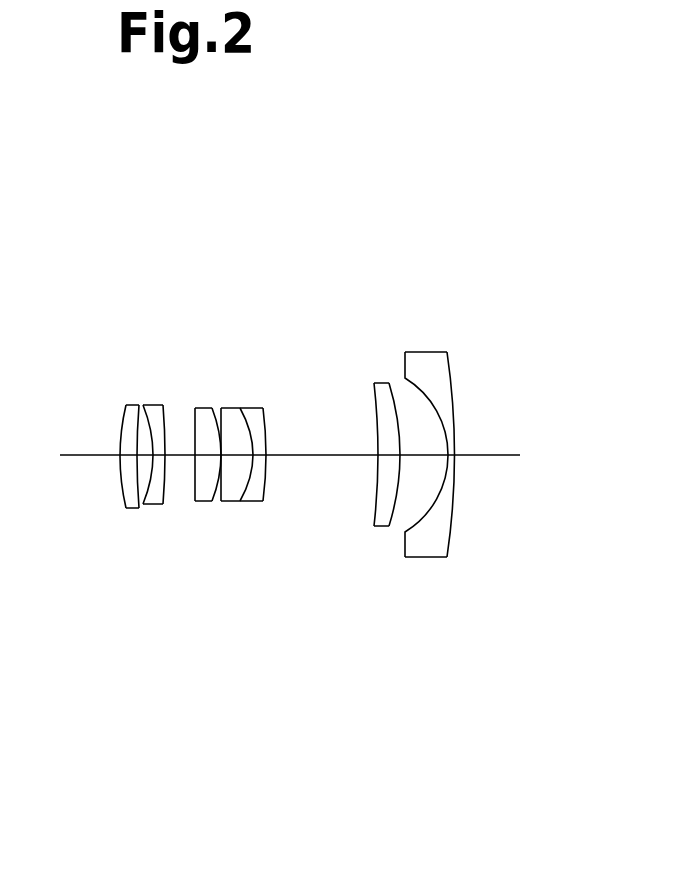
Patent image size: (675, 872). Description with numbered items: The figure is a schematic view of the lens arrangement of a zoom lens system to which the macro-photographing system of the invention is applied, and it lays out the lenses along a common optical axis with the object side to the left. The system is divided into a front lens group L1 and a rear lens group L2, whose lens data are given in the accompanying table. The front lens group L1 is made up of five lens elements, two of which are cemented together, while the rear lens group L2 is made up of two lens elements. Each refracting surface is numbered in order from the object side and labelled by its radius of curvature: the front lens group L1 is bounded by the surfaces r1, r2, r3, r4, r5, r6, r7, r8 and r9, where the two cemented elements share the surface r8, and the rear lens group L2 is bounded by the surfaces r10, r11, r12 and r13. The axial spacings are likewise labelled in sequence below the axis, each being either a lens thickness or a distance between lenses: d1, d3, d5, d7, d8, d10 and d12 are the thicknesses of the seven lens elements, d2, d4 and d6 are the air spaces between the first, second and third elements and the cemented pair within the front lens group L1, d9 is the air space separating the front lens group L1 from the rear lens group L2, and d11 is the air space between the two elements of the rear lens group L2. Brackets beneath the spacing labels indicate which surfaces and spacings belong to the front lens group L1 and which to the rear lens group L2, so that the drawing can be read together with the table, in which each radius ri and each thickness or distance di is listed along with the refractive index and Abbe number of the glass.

The radius of curvature of the first lens surface r1 is at (126, 405).
The radius of curvature of the second lens surface r2 is at (139, 405).
The radius of curvature of the third lens surface r3 is at (143, 405).
The radius of curvature of the fourth lens surface r4 is at (163, 405).
The radius of curvature of the fifth lens surface r5 is at (195, 408).
The radius of curvature of the sixth lens surface r6 is at (212, 408).
The radius of curvature of the seventh lens surface r7 is at (221, 408).
The radius of curvature of the eighth lens surface r8 is at (240, 408).
The radius of curvature of the ninth lens surface r9 is at (263, 408).
The radius of curvature of the tenth lens surface r10 is at (374, 383).
The radius of curvature of the eleventh lens surface r11 is at (389, 383).
The radius of curvature of the twelfth lens surface r12 is at (405, 378).
The radius of curvature of the thirteenth lens surface r13 is at (447, 352).
The lens thickness d1 is at (128, 455).
The distance between lenses d2 is at (145, 455).
The lens thickness d3 is at (159, 455).
The distance between lenses d4 is at (180, 455).
The lens thickness d5 is at (208, 455).
The distance between lenses d6 is at (220, 455).
The lens thickness d7 is at (237, 455).
The lens thickness d8 is at (258, 455).
The distance between lenses d9 is at (342, 563).
The lens thickness d10 is at (387, 455).
The distance between lenses d11 is at (423, 455).
The lens thickness d12 is at (458, 455).
The front lens group L1 is at (197, 499).
The rear lens group L2 is at (455, 500).